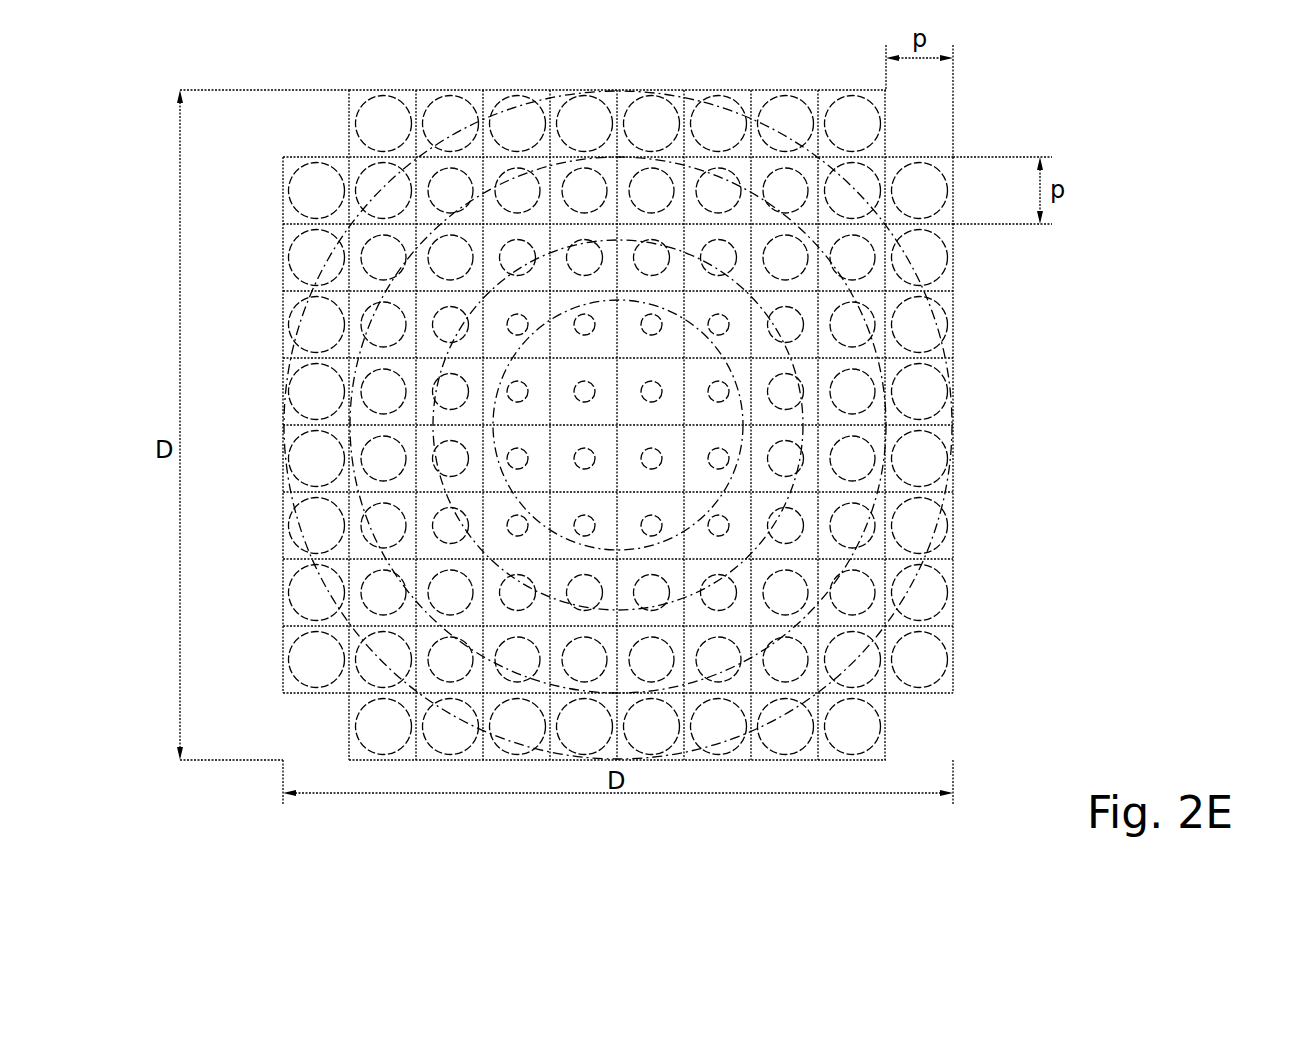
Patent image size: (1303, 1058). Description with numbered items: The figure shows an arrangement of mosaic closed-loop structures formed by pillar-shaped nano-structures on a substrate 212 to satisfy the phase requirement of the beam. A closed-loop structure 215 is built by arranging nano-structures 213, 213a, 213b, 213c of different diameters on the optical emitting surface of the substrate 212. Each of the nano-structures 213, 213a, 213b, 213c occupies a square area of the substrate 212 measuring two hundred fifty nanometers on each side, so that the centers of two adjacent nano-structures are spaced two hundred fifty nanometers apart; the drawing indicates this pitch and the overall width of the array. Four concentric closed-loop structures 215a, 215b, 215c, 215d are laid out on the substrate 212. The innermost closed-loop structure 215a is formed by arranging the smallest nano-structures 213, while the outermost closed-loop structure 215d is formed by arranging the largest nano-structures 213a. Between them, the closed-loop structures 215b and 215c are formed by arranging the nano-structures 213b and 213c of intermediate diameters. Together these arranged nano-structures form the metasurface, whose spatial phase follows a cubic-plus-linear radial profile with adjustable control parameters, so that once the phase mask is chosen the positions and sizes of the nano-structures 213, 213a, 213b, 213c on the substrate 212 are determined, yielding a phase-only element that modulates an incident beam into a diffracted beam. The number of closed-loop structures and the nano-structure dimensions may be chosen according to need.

The substrate 212 is at (702, 425).
The nano-structure 213 is at (523, 393).
The nano-structure 213a is at (297, 385).
The nano-structure 213b is at (380, 388).
The nano-structure 213c is at (450, 383).
The closed-loop structure 215 is at (1080, 530).
The innermost closed-loop structure 215a is at (786, 425).
The closed-loop structure 215b is at (757, 425).
The closed-loop structure 215c is at (713, 425).
The outermost closed-loop structure 215d is at (905, 250).